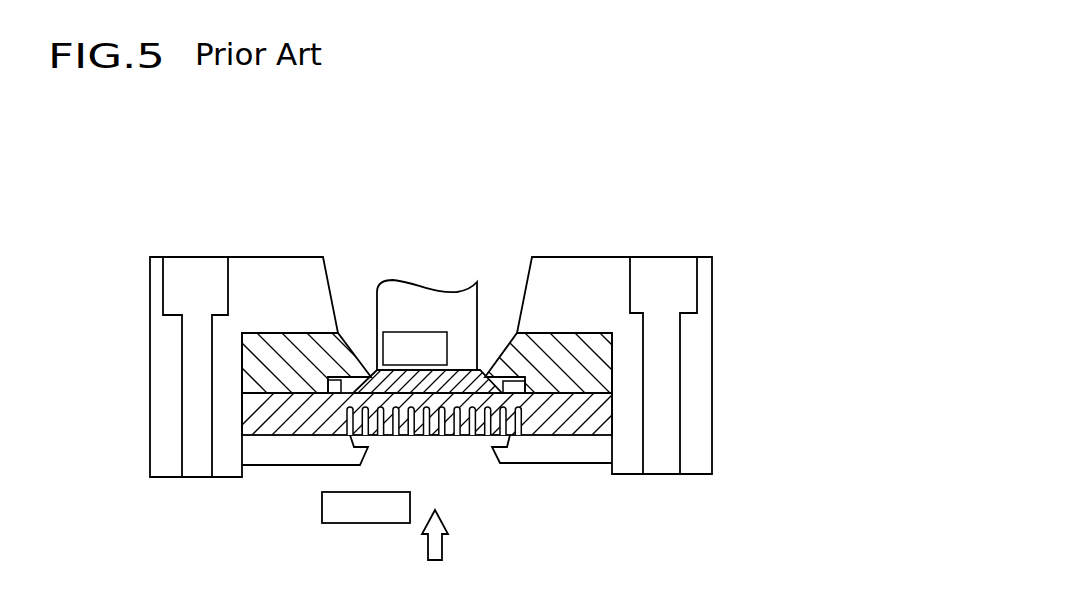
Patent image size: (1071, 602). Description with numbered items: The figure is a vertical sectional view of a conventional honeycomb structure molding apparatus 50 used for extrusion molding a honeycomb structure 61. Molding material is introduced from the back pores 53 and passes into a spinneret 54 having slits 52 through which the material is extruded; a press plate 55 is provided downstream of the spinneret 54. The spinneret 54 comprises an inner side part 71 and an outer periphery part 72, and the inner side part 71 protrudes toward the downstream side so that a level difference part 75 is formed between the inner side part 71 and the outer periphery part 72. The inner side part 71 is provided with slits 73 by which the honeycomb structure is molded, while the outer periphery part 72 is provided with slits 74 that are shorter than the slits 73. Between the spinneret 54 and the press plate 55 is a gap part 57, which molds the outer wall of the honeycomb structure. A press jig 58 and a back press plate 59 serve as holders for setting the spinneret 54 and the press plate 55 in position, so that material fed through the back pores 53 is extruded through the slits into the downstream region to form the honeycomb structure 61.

The honeycomb structure molding apparatus 50 is at (622, 218).
The slits 52 is at (460, 515).
The back pores 53 is at (393, 436).
The spinneret 54 is at (612, 402).
The press plate 55 is at (540, 357).
The gap part 57 is at (513, 381).
The press jig 58 is at (573, 302).
The back press plate 59 is at (593, 450).
The honeycomb structure 61 is at (457, 292).
The inner side part 71 is at (447, 370).
The outer periphery part 72 is at (336, 377).
The slits 73 is at (473, 435).
The slits 74 is at (520, 405).
The level difference part 75 is at (370, 375).